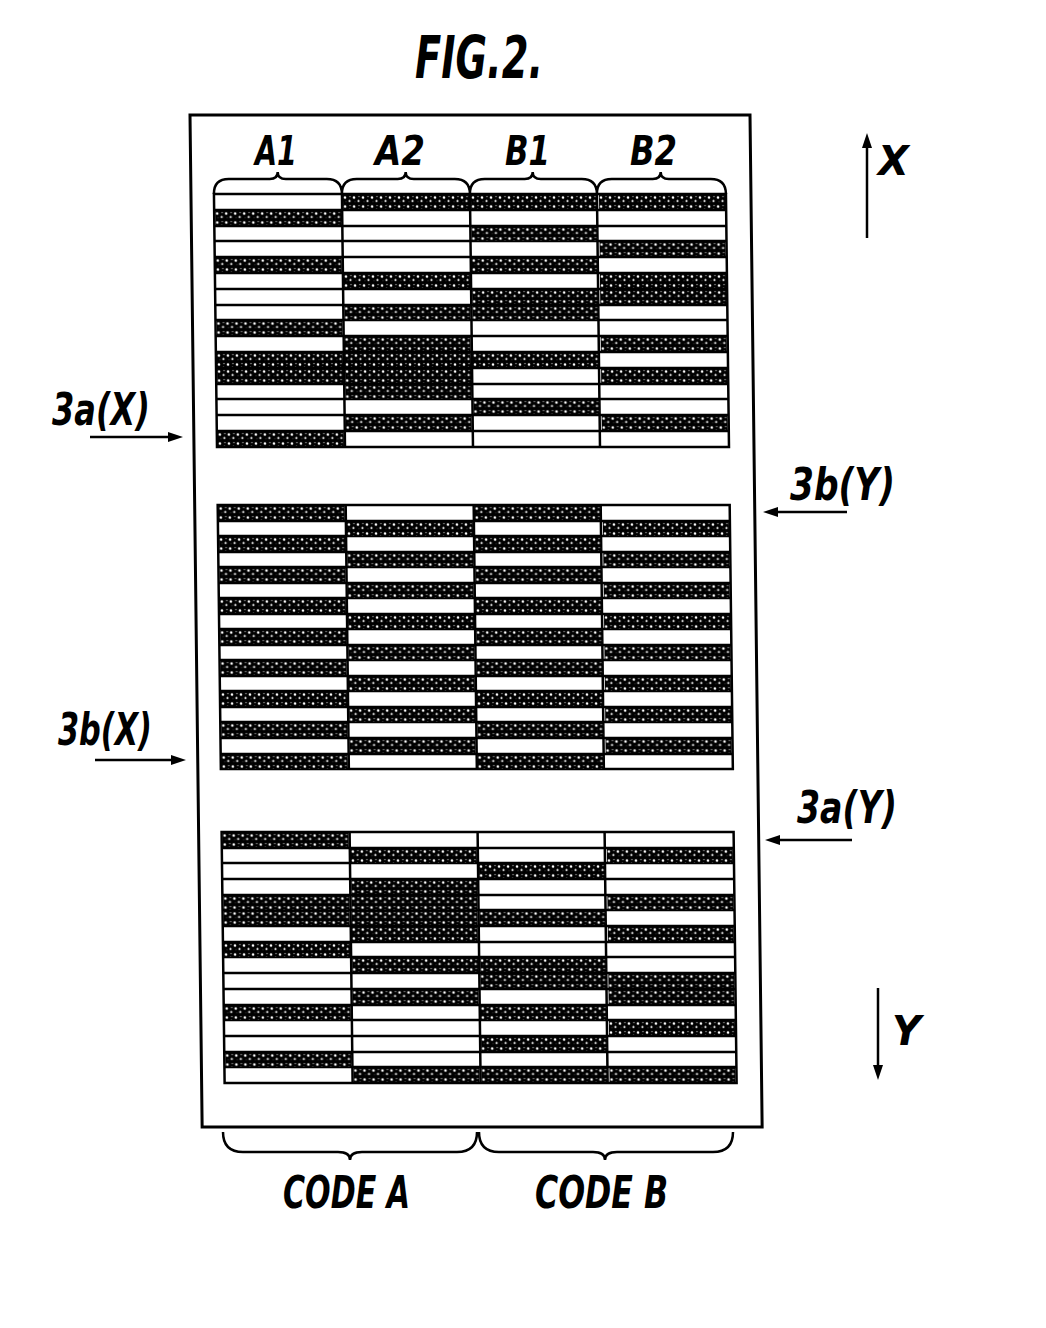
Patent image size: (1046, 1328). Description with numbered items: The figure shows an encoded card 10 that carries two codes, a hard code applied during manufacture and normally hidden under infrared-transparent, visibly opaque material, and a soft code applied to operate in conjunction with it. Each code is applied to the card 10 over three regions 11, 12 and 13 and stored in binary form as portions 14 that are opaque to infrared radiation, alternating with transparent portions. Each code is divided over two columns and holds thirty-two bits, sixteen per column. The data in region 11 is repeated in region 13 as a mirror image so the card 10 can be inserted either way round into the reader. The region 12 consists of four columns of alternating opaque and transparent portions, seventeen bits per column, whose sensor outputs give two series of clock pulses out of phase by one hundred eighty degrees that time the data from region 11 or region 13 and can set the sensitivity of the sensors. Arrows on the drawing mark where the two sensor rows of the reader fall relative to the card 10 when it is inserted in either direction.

The card 10 is at (473, 621).
The region 11 is at (725, 352).
The region 12 is at (725, 640).
The region 13 is at (725, 969).
The opaque portion 14 is at (213, 268).